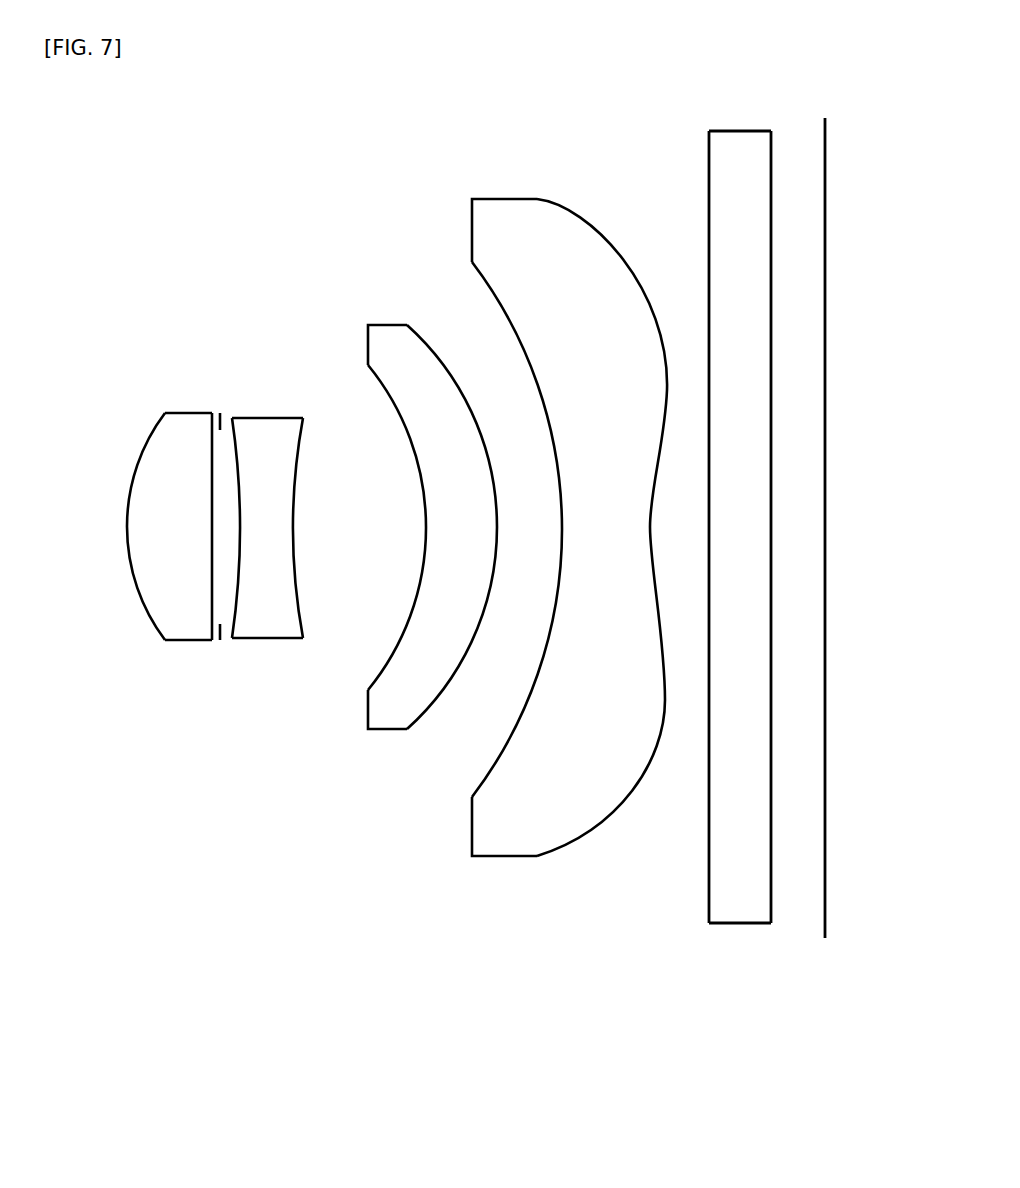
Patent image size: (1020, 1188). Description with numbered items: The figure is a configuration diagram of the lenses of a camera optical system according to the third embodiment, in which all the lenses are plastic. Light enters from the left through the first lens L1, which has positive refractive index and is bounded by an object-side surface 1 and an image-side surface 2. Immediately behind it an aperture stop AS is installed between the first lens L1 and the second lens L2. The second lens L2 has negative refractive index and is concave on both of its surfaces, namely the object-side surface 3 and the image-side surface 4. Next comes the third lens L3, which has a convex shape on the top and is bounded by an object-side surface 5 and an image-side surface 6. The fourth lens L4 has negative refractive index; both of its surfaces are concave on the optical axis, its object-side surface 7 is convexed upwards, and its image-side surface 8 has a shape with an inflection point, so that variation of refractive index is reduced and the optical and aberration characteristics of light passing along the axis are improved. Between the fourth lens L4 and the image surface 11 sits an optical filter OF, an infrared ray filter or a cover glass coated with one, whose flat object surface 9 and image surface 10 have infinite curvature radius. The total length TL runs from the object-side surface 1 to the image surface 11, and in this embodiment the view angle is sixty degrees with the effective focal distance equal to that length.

The object-side surface of the first lens 1 is at (128, 502).
The image-side surface of the first lens 2 is at (212, 468).
The object-side surface of the second lens 3 is at (240, 470).
The image-side surface of the second lens 4 is at (297, 477).
The object-side surface of the third lens 5 is at (398, 422).
The image-side surface of the third lens 6 is at (422, 343).
The object-side surface of the fourth lens 7 is at (477, 273).
The image-side surface of the fourth lens 8 is at (601, 233).
The object surface of the optical filter 9 is at (709, 163).
The image surface of the optical filter 10 is at (771, 160).
The image surface 11 is at (825, 200).
The first lens L1 is at (127, 543).
The second lens L2 is at (256, 513).
The third lens L3 is at (386, 560).
The fourth lens L4 is at (531, 563).
The aperture stop AS is at (222, 644).
The optical filter OF is at (741, 546).